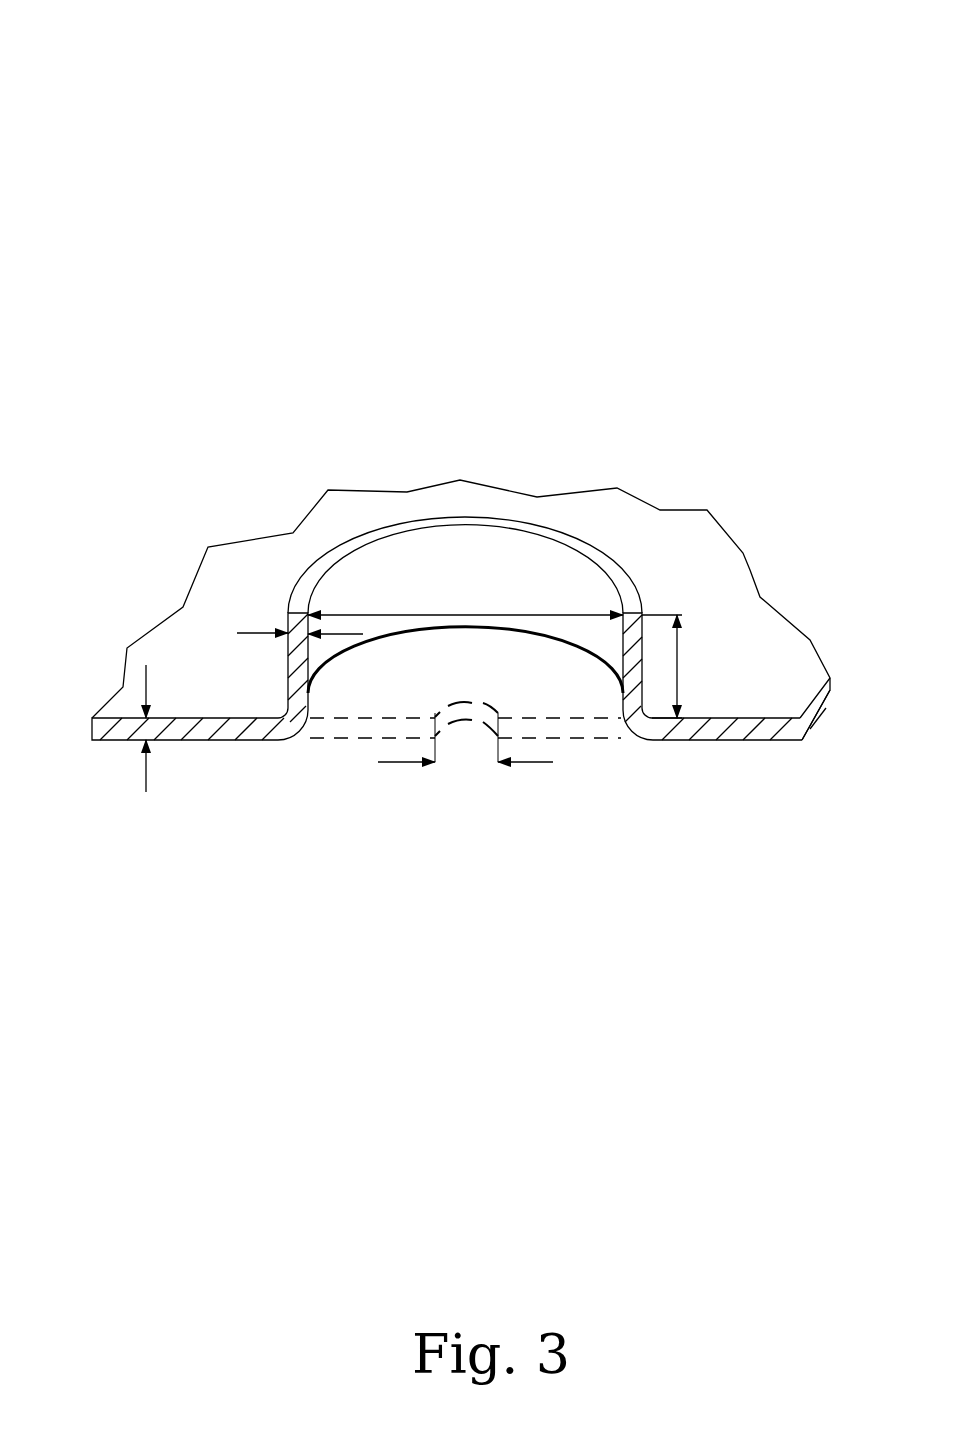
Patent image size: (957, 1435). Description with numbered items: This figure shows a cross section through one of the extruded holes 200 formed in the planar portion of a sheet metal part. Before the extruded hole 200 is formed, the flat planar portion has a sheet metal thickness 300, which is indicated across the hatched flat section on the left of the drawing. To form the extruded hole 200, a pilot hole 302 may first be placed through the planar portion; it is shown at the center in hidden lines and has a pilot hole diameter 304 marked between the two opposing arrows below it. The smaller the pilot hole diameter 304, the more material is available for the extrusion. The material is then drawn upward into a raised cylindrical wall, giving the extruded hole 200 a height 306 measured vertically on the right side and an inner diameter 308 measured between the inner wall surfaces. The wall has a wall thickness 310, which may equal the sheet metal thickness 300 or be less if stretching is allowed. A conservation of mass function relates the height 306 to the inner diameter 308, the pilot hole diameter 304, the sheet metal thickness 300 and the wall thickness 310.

The extruded hole 200 is at (822, 48).
The sheet metal thickness 300 is at (145, 792).
The pilot hole 302 is at (470, 735).
The pilot hole diameter 304 is at (378, 762).
The height 306 is at (680, 667).
The inner diameter 308 is at (465, 615).
The wall thickness 310 is at (237, 633).